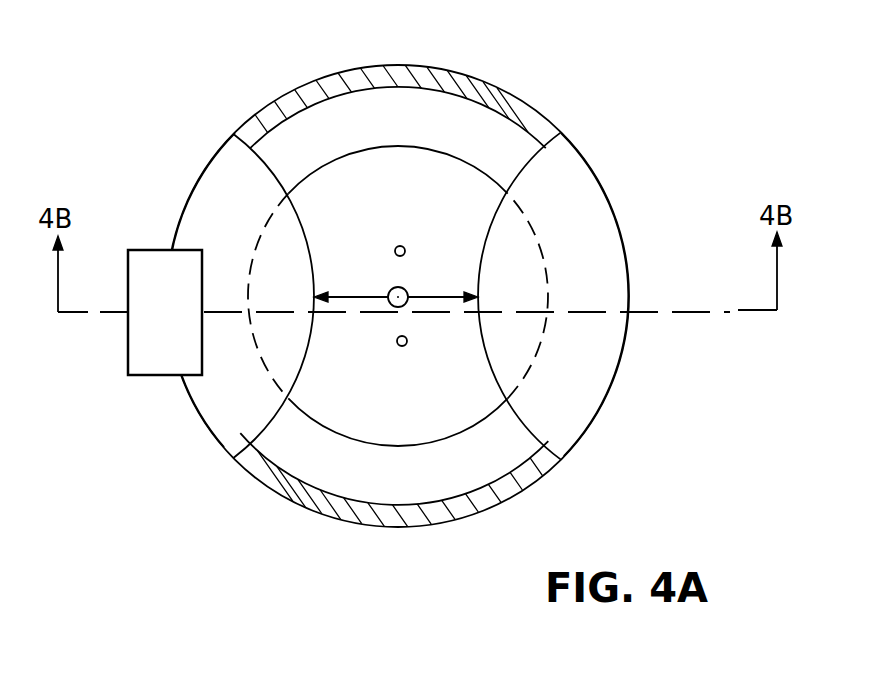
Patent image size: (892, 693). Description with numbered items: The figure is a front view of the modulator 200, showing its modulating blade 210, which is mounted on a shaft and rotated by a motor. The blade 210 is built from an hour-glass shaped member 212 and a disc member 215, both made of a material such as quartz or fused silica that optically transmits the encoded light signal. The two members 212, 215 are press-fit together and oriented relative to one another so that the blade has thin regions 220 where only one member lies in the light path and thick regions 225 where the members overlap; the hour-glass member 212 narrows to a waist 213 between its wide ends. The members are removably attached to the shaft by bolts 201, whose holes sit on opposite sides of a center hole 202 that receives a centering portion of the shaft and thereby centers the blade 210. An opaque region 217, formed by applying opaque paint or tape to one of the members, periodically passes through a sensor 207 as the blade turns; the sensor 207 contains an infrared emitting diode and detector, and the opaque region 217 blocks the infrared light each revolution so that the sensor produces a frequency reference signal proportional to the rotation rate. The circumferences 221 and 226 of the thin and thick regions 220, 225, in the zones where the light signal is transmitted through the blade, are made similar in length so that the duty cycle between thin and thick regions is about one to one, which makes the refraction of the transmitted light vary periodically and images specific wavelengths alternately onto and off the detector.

The modulator 200 is at (566, 104).
The bolts 201 is at (394, 253).
The center hole 202 is at (391, 304).
The sensor 207 is at (138, 360).
The modulating blade 210 is at (578, 203).
The hour-glass shaped member 212 is at (518, 442).
The waist 213 is at (430, 292).
The disc member 215 is at (225, 175).
The opaque region 217 is at (443, 72).
The thin regions 220 is at (607, 288).
The circumference of thin region 221 is at (255, 247).
The thick regions 225 is at (314, 128).
The circumference of thick region 226 is at (355, 147).